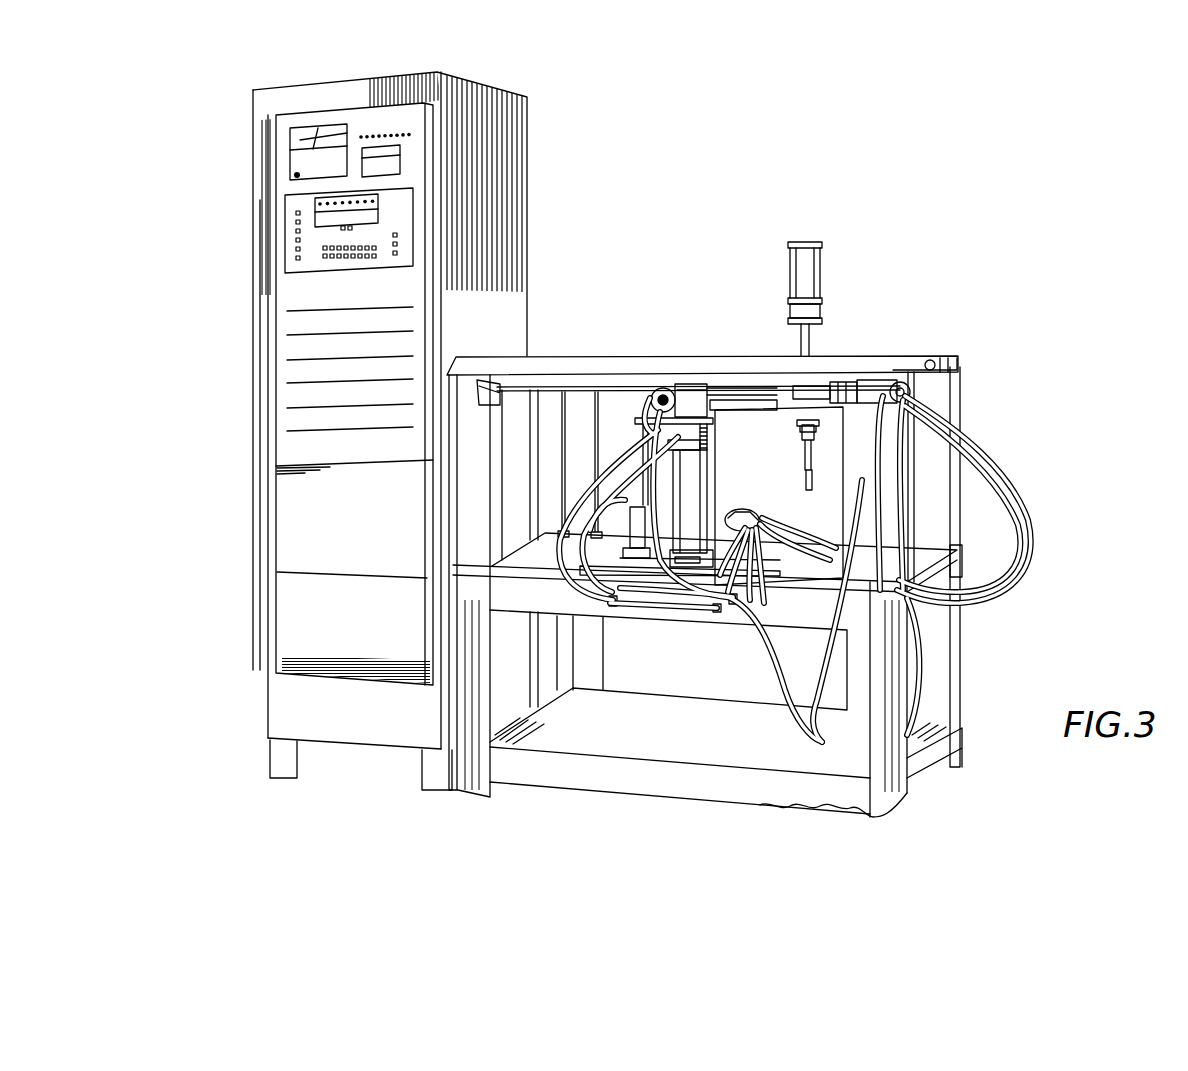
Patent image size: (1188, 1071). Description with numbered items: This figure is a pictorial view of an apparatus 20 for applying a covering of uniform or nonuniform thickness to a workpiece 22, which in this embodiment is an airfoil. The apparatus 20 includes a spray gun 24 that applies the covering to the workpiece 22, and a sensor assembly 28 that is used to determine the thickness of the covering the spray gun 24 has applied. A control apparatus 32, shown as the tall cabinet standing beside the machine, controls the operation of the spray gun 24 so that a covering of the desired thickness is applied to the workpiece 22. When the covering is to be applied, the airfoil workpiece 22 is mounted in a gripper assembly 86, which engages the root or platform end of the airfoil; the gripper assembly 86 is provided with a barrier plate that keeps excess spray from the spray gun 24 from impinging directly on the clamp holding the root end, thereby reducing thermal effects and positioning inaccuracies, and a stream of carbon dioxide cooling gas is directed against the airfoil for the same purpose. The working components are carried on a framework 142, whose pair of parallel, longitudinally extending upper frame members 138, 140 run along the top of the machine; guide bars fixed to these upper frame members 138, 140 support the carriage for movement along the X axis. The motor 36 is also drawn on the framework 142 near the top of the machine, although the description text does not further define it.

The apparatus 20 is at (948, 240).
The workpiece 22 is at (808, 475).
The spray gun 24 is at (760, 515).
The sensor assembly 28 is at (693, 520).
The control apparatus 32 is at (288, 598).
The drive motor 36 is at (690, 375).
The gripper assembly 86 is at (800, 447).
The upper frame member 138 is at (860, 372).
The upper frame member 140 is at (938, 360).
The framework 142 is at (953, 400).